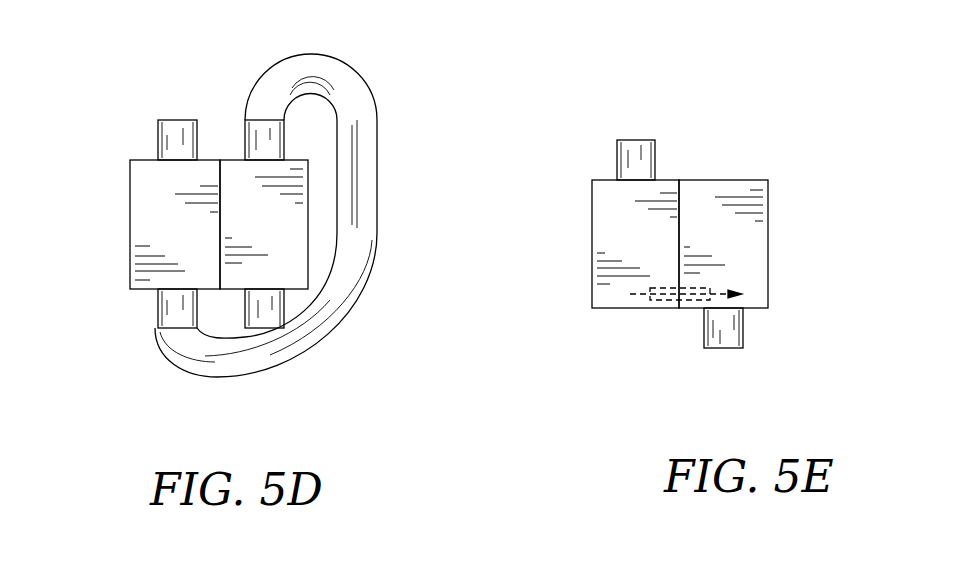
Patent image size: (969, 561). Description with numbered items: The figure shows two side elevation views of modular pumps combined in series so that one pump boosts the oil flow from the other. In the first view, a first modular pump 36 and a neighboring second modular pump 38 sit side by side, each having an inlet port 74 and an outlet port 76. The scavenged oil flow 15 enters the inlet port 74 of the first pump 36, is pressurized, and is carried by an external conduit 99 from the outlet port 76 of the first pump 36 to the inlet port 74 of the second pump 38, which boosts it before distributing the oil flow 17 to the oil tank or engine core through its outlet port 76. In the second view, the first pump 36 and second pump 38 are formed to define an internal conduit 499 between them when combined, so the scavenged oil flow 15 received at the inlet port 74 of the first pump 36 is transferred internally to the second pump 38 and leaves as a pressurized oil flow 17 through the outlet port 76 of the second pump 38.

In FIG. 5D, the scavenged oil flow 15 is at (177, 106).
In FIG. 5E, the scavenged oil flow 15 is at (636, 118).
In FIG. 5D, the oil flow 17 is at (263, 340).
In FIG. 5E, the oil flow 17 is at (724, 360).
In FIG. 5D, the first modular pump 36 is at (118, 187).
In FIG. 5E, the first modular pump 36 is at (596, 174).
In FIG. 5D, the second modular pump 38 is at (222, 146).
In FIG. 5E, the second modular pump 38 is at (772, 176).
In FIG. 5D, the inlet port 74 is at (152, 130).
In FIG. 5E, the inlet port 74 is at (664, 162).
In FIG. 5D, the outlet port 76 is at (147, 310).
In FIG. 5E, the outlet port 76 is at (754, 330).
In FIG. 5D, the conduit 99 is at (385, 195).
In FIG. 5E, the internal conduit 499 is at (668, 300).